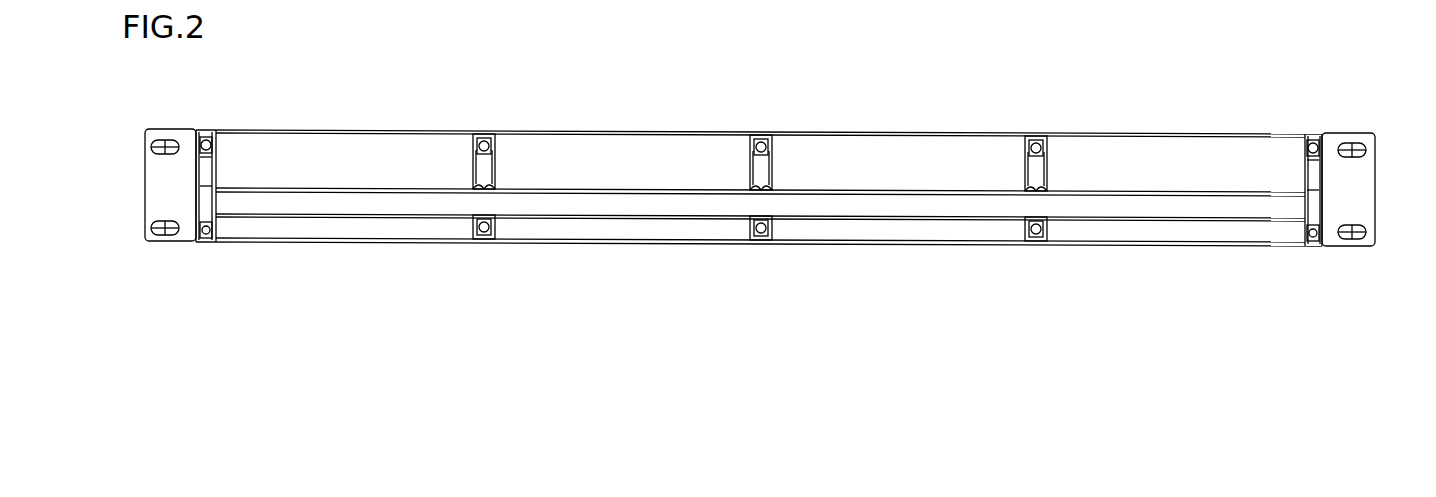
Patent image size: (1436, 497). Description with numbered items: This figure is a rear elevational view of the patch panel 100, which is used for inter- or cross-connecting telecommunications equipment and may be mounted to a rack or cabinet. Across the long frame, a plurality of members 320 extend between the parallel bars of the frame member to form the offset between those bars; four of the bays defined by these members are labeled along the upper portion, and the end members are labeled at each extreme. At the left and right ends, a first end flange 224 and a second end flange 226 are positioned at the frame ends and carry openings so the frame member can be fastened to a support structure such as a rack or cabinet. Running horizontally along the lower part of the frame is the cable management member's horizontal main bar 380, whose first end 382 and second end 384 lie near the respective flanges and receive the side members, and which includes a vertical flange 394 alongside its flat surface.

The patch panel 100 is at (1098, 92).
The first end flange 224 is at (155, 190).
The second end flange 226 is at (1365, 187).
The member 320 is at (209, 137).
The horizontal main bar 380 is at (900, 210).
The first end 382 is at (207, 232).
The second end 384 is at (1315, 214).
The vertical flange 394 is at (1100, 214).